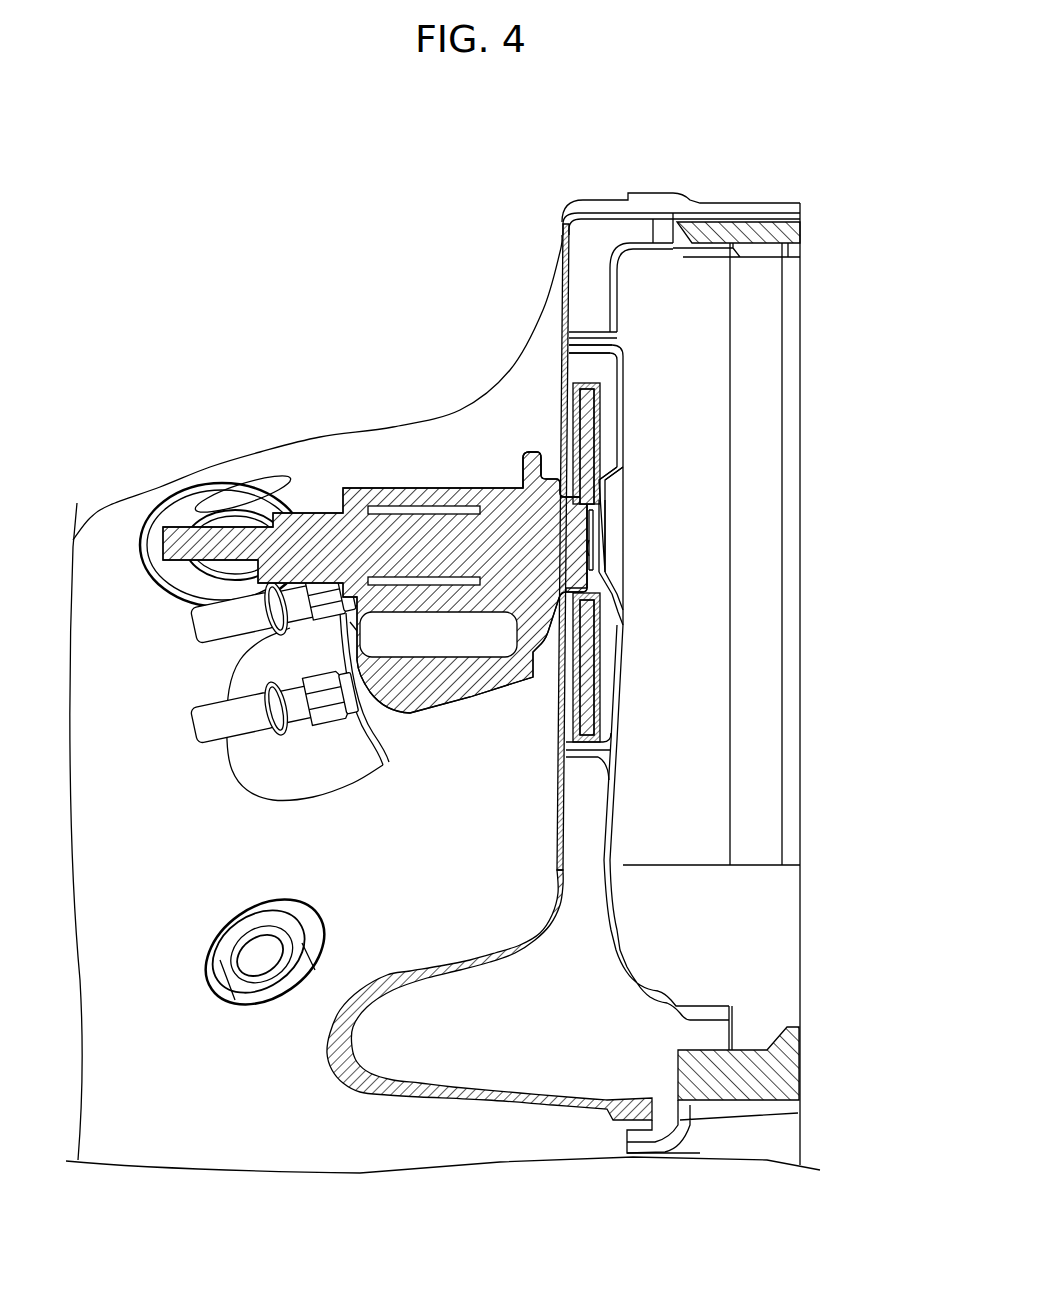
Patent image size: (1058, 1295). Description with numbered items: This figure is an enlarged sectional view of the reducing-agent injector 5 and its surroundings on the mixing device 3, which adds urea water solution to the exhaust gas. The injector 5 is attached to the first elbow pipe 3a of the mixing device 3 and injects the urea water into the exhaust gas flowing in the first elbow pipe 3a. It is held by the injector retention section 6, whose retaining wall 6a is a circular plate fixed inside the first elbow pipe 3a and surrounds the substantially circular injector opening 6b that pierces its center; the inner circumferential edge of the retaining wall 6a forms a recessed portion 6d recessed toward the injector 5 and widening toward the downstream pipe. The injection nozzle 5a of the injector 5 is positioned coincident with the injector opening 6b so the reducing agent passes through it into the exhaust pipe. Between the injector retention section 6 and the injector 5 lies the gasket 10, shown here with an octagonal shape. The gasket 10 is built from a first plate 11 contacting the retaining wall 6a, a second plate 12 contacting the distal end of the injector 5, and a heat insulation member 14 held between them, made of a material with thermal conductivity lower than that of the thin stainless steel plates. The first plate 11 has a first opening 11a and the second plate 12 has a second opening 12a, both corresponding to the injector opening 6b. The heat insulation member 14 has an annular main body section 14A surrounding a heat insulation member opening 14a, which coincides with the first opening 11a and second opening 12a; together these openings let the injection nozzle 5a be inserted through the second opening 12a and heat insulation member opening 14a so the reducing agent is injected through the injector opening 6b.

The mixing device 3 is at (779, 207).
The first elbow pipe 3a is at (661, 250).
The reducing-agent injector 5 is at (403, 490).
The injection nozzle 5a is at (588, 569).
The reducing-agent-injector retention section 6 is at (567, 730).
The retaining wall 6a is at (560, 464).
The injector opening 6b is at (607, 507).
The recessed portion 6d is at (613, 474).
The reducing-agent injector gasket 10 is at (583, 378).
The first plate 11 is at (600, 402).
The first opening 11a is at (603, 525).
The second plate 12 is at (612, 717).
The second opening 12a is at (583, 509).
The heat insulation member 14 is at (588, 393).
The main body section 14A is at (594, 590).
The heat insulation member opening 14a is at (598, 558).